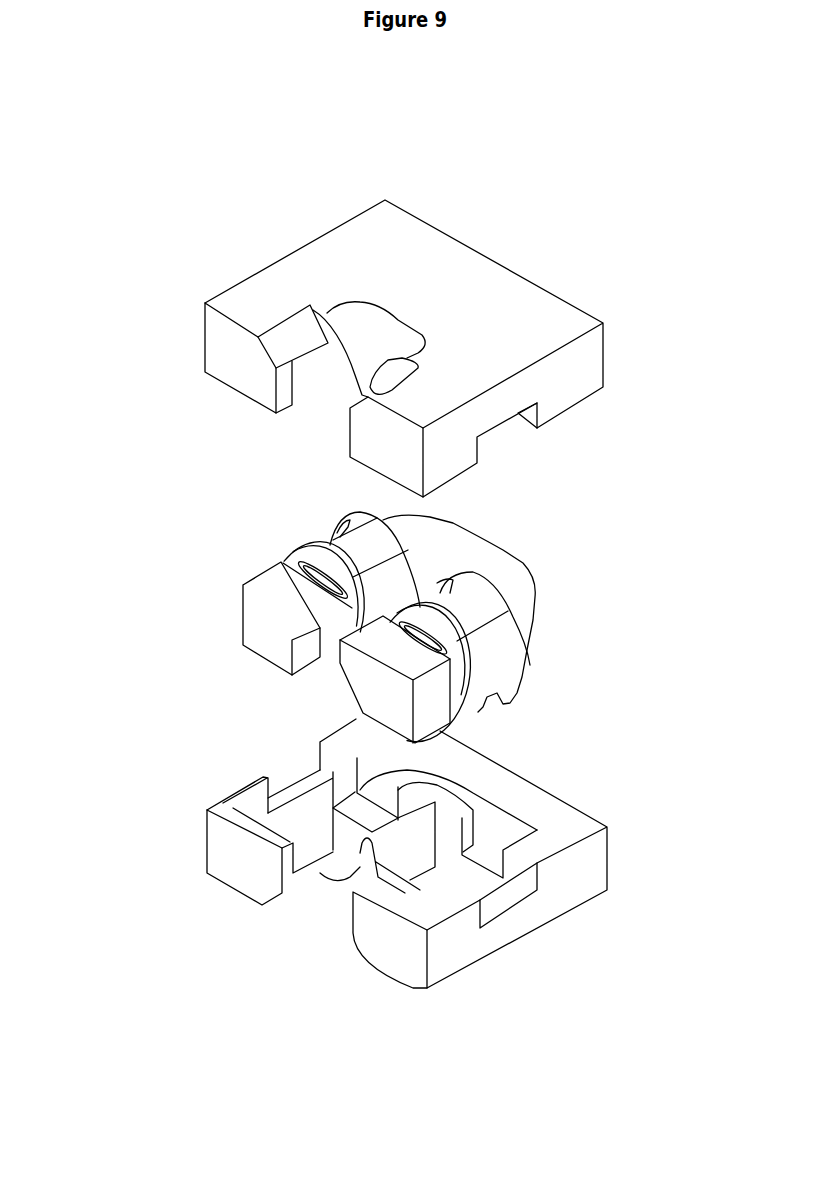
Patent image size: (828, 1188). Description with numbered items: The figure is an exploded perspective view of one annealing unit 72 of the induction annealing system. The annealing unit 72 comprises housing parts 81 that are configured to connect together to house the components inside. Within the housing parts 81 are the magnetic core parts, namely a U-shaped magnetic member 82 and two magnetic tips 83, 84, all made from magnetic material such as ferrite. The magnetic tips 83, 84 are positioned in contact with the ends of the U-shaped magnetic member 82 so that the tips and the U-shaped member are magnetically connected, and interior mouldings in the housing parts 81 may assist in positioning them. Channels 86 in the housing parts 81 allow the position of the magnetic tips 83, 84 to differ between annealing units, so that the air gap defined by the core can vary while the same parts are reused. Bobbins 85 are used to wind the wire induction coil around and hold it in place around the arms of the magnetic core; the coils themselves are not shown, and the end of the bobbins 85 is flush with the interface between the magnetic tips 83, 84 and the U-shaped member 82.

The annealing unit 72 is at (125, 200).
The housing parts 81 is at (510, 317).
The U-shaped magnetic member 82 is at (500, 572).
The magnetic tip 83 is at (267, 613).
The magnetic tip 84 is at (377, 677).
The bobbins 85 is at (330, 544).
The channels 86 is at (305, 852).